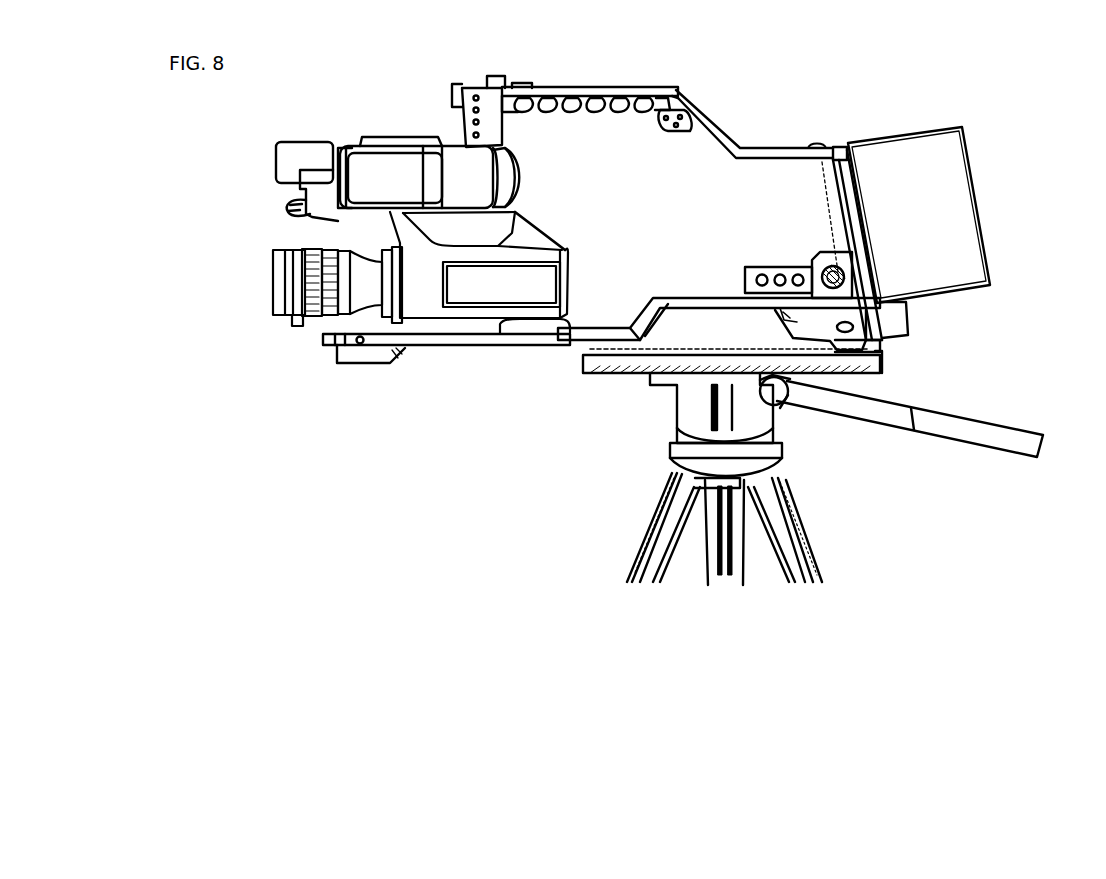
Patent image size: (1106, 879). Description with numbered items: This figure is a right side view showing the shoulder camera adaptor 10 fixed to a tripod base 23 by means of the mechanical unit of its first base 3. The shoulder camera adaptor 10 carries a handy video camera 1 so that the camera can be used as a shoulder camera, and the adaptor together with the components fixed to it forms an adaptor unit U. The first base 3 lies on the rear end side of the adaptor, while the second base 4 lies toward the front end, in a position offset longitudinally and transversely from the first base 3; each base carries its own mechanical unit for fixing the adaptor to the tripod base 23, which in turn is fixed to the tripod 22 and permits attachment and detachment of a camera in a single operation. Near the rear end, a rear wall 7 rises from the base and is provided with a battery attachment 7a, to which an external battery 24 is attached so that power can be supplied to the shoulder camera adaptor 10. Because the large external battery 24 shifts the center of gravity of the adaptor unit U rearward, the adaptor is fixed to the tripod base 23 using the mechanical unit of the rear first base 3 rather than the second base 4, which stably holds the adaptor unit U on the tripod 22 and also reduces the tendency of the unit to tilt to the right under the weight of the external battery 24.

The handy video camera 1 is at (333, 125).
The adaptor unit U is at (226, 172).
The shoulder camera adaptor 10 is at (763, 119).
The battery attachment 7a is at (840, 147).
The rear wall 7 is at (833, 203).
The external battery 24 is at (975, 210).
The first base 3 is at (688, 280).
The second base 4 is at (307, 342).
The tripod base 23 is at (592, 360).
The tripod 22 is at (688, 410).